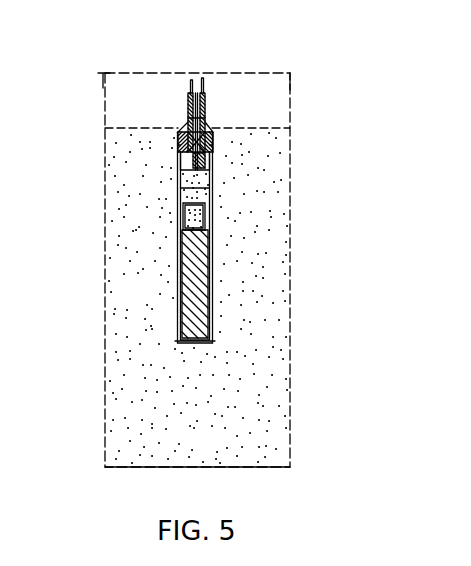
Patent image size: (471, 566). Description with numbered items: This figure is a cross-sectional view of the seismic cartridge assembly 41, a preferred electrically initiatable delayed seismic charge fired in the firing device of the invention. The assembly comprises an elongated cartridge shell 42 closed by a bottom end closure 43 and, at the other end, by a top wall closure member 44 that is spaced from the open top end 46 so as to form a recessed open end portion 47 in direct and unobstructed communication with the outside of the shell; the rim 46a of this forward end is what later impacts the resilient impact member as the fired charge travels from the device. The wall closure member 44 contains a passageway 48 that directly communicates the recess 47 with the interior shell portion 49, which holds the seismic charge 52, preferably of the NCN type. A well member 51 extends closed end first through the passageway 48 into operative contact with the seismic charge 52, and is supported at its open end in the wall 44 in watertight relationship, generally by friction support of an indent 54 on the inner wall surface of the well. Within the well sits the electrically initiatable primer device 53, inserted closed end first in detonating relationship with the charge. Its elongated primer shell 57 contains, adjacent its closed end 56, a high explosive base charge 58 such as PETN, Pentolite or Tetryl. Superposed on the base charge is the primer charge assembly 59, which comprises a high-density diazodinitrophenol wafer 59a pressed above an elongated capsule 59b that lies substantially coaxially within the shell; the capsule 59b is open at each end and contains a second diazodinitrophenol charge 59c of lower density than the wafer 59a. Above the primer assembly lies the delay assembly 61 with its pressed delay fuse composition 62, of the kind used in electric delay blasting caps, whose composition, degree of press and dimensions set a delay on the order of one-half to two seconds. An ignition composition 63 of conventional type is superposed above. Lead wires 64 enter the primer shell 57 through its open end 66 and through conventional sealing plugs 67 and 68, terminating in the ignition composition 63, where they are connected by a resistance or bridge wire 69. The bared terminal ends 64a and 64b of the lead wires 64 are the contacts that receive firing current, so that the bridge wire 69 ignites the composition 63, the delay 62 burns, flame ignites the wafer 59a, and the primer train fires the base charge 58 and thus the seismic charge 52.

The seismic cartridge assembly 41 is at (292, 343).
The cartridge shell 42 is at (291, 300).
The bottom end closure 43 is at (250, 467).
The wall closure member 44 is at (253, 128).
The open top end 46 is at (291, 73).
The rim 46a is at (291, 77).
The recessed open end portion 47 is at (129, 106).
The passageway 48 is at (208, 128).
The interior shell portion 49 is at (128, 296).
The well member 51 is at (213, 315).
The seismic charge 52 is at (281, 371).
The electrically initiatable primer device 53 is at (214, 273).
The indent 54 is at (181, 148).
The closed end 56 is at (195, 341).
The primer shell 57 is at (181, 244).
The high explosive base charge 58 is at (188, 312).
The primer charge assembly 59 is at (198, 224).
The diazodinitrophenol wafer 59a is at (214, 212).
The capsule 59b is at (181, 222).
The second diazodinitrophenol charge 59c is at (203, 229).
The delay assembly 61 is at (179, 189).
The delay fuse composition 62 is at (210, 188).
The ignition composition 63 is at (186, 170).
The lead wires 64 is at (191, 82).
The bared terminal end 64a is at (192, 80).
The bared terminal end 64b is at (205, 80).
The open end 66 is at (183, 128).
The sealing plug 67 is at (186, 160).
The sealing plug 68 is at (178, 141).
The bridge wire 69 is at (208, 185).